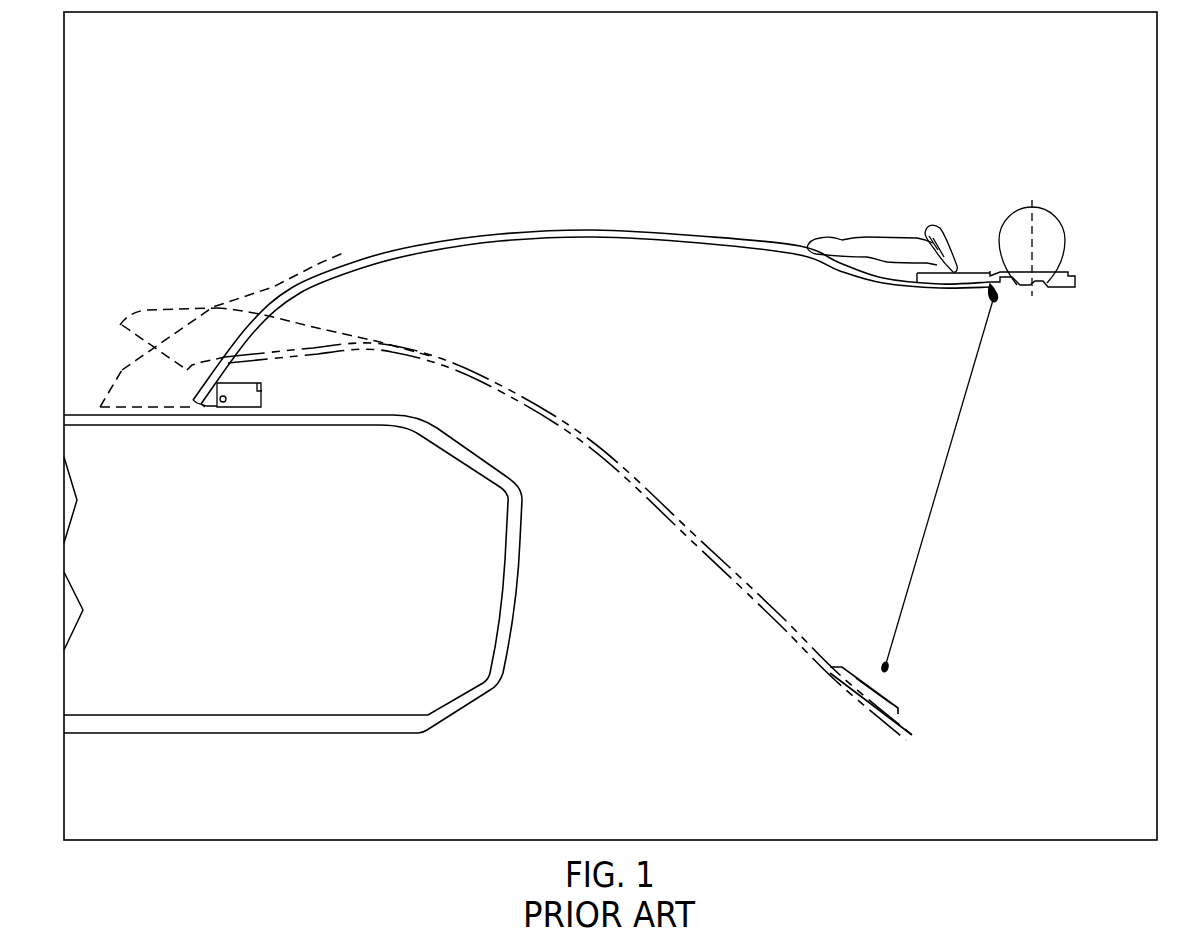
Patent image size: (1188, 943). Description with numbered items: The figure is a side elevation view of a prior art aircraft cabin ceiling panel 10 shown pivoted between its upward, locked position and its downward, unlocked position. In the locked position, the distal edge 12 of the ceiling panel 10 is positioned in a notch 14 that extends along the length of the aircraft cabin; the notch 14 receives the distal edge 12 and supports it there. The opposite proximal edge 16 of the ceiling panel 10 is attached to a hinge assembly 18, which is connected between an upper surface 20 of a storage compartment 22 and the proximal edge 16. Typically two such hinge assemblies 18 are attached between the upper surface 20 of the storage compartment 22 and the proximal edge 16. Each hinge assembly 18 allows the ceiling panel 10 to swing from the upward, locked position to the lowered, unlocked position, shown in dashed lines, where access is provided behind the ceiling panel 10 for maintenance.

The ceiling panel 10 is at (515, 237).
The distal edge 12 is at (1007, 287).
The notch 14 is at (993, 283).
The proximal edge 16 is at (192, 402).
The hinge assembly 18 is at (288, 383).
The upper surface 20 is at (344, 408).
The storage compartment 22 is at (527, 500).